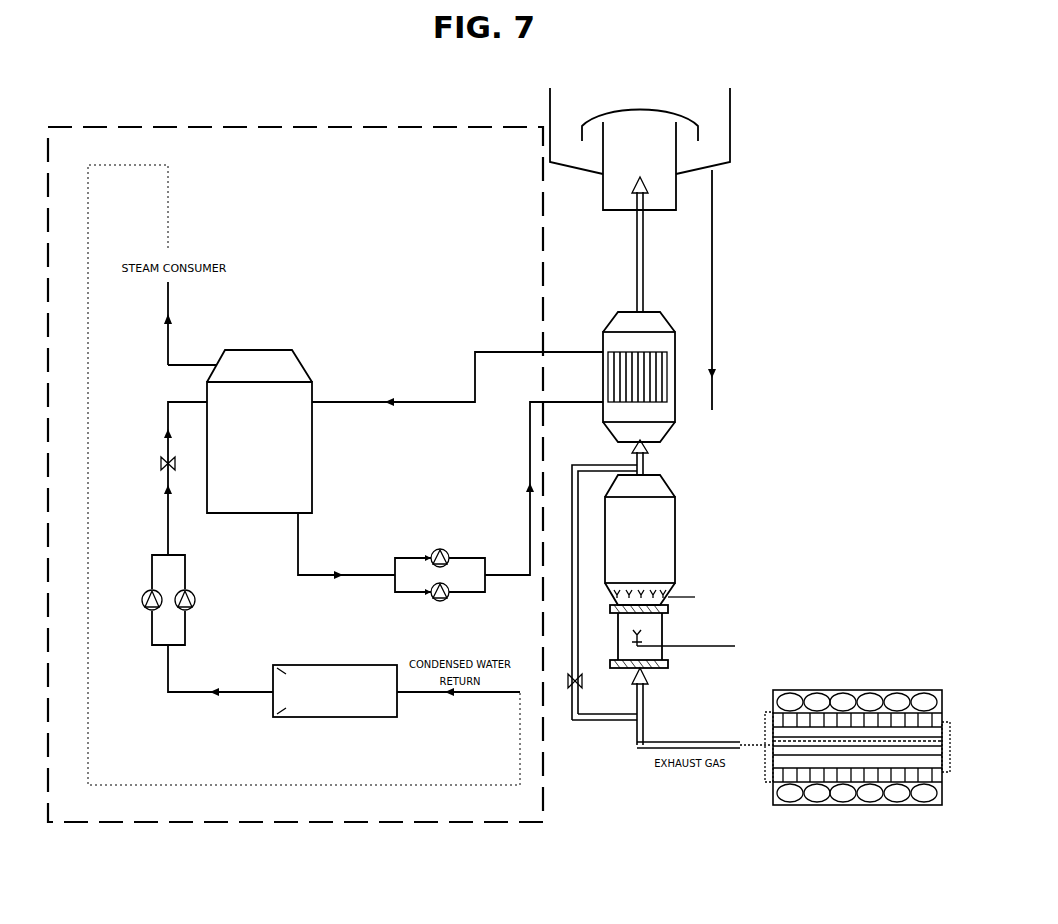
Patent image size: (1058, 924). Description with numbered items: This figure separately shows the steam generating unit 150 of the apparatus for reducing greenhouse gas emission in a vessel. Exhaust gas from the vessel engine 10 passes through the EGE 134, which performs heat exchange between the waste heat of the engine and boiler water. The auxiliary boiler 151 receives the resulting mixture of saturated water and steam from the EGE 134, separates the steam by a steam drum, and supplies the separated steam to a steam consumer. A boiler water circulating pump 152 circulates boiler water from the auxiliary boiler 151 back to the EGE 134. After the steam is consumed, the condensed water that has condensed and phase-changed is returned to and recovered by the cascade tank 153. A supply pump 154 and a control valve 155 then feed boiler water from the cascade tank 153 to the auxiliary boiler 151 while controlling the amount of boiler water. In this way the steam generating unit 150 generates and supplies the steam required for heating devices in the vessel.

The steam generating unit 150 is at (284, 115).
The auxiliary boiler 151 is at (259, 431).
The boiler water circulating pump 152 is at (440, 564).
The cascade tank 153 is at (335, 691).
The supply pump 154 is at (187, 600).
The control valve 155 is at (146, 463).
The EGE 134 is at (620, 377).
The vessel engine 10 is at (857, 759).